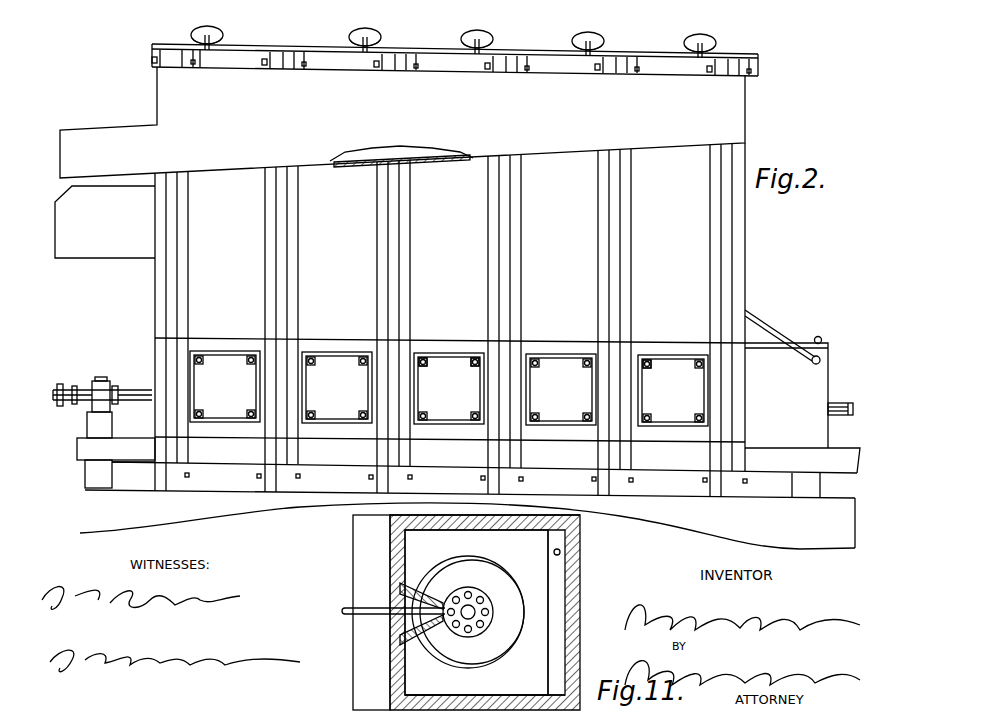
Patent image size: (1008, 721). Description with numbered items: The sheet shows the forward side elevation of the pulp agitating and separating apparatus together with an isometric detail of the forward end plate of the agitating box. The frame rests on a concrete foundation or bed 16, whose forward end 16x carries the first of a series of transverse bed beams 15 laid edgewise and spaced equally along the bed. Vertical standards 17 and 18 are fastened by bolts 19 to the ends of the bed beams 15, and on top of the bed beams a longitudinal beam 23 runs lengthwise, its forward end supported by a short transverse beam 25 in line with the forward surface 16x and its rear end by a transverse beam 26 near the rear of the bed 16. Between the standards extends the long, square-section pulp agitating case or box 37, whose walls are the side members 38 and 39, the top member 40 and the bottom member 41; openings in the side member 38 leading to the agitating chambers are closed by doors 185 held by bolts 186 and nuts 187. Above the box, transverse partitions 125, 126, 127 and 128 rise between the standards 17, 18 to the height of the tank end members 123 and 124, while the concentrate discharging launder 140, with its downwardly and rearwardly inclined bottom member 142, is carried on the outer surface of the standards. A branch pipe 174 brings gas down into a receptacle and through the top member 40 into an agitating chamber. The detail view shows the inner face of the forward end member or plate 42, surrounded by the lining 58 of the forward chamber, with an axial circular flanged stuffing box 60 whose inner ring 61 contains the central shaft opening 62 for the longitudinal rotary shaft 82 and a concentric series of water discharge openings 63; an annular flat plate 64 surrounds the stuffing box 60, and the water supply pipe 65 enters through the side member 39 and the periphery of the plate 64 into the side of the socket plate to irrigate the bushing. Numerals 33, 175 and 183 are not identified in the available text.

In FIG. 2, the transverse bed beams 15 is at (172, 473).
In FIG. 2, the concrete foundation or bed 16 is at (418, 44).
In FIG. 2, the forward end of the foundation 16x is at (838, 523).
In FIG. 2, the vertical standard 17 is at (180, 317).
In FIG. 2, the vertical standard 18 is at (160, 326).
In FIG. 2, the bolts 19 is at (133, 475).
In FIG. 2, the longitudinal beam 23 is at (841, 458).
In FIG. 2, the short transverse beam 25 is at (806, 500).
In FIG. 2, the transverse beam 26 is at (85, 480).
In FIG. 2, the support block 33 is at (87, 424).
In FIG. 2, the pulp agitating case or box 37 is at (200, 343).
In FIG. 2, the side member 38 is at (786, 393).
In FIG. 11, the side member 38 is at (580, 658).
In FIG. 11, the side member 39 is at (362, 540).
In FIG. 11, the top member 40 is at (581, 516).
In FIG. 11, the bottom member 41 is at (493, 703).
In FIG. 11, the end member or plate 42 is at (476, 612).
In FIG. 11, the lining 58 is at (580, 640).
In FIG. 11, the socket plate or stuffing box 60 is at (455, 591).
In FIG. 11, the inner ring 61 is at (492, 601).
In FIG. 11, the central shaft opening 62 is at (488, 615).
In FIG. 11, the openings 63 is at (440, 626).
In FIG. 11, the annular flat plate 64 is at (415, 590).
In FIG. 11, the water supply pipe 65 is at (360, 607).
In FIG. 2, the longitudinal rotary shaft 82 is at (140, 401).
In FIG. 2, the forward end member of the tank 123 is at (730, 62).
In FIG. 2, the rear end member of the tank 124 is at (178, 56).
In FIG. 2, the transverse partition 125 is at (620, 62).
In FIG. 2, the transverse partition 126 is at (506, 58).
In FIG. 2, the transverse partition 127 is at (396, 62).
In FIG. 2, the transverse partition 128 is at (288, 56).
In FIG. 2, the concentrate discharging box or launder 140 is at (402, 122).
In FIG. 2, the bottom member of the launder 142 is at (421, 163).
In FIG. 2, the branch pipe 174 is at (782, 340).
In FIG. 2, the pivot 175 is at (812, 364).
In FIG. 11, the pivot 175 is at (580, 553).
In FIG. 2, the projection 183 is at (108, 245).
In FIG. 2, the door 185 is at (449, 388).
In FIG. 2, the bolts 186 is at (423, 358).
In FIG. 2, the nuts 187 is at (472, 366).